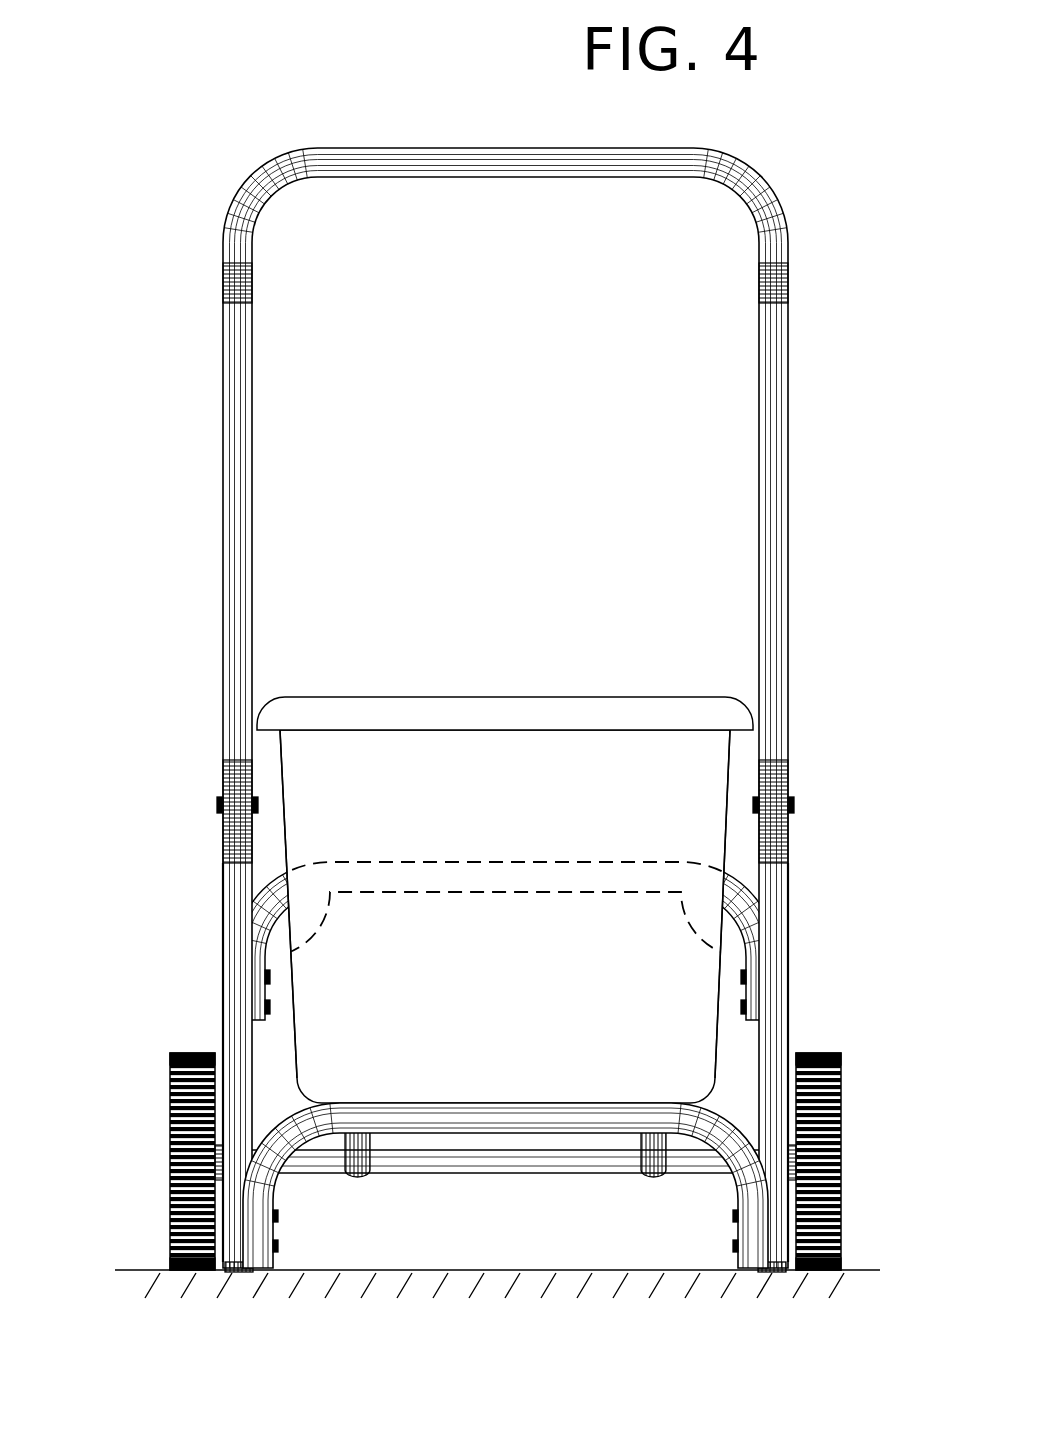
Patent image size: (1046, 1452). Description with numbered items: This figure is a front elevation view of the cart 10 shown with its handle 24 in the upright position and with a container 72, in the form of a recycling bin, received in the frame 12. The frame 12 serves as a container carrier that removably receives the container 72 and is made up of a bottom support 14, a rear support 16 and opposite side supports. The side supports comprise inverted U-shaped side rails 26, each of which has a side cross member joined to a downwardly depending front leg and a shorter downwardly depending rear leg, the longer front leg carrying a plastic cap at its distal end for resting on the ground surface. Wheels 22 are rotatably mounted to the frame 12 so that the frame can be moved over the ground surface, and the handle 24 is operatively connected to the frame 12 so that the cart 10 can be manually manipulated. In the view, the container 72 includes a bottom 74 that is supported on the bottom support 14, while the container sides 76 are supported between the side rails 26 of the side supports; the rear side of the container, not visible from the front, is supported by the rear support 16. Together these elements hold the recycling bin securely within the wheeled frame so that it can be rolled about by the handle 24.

The cart 10 is at (206, 460).
The frame 12 is at (800, 930).
The bottom support 14 is at (296, 1110).
The rear support 16 is at (268, 897).
The wheels 22 is at (173, 1100).
The handle 24 is at (226, 647).
The side rails 26 is at (228, 955).
The container 72 is at (430, 688).
The bottom 74 is at (437, 1102).
The container sides 76 is at (285, 790).